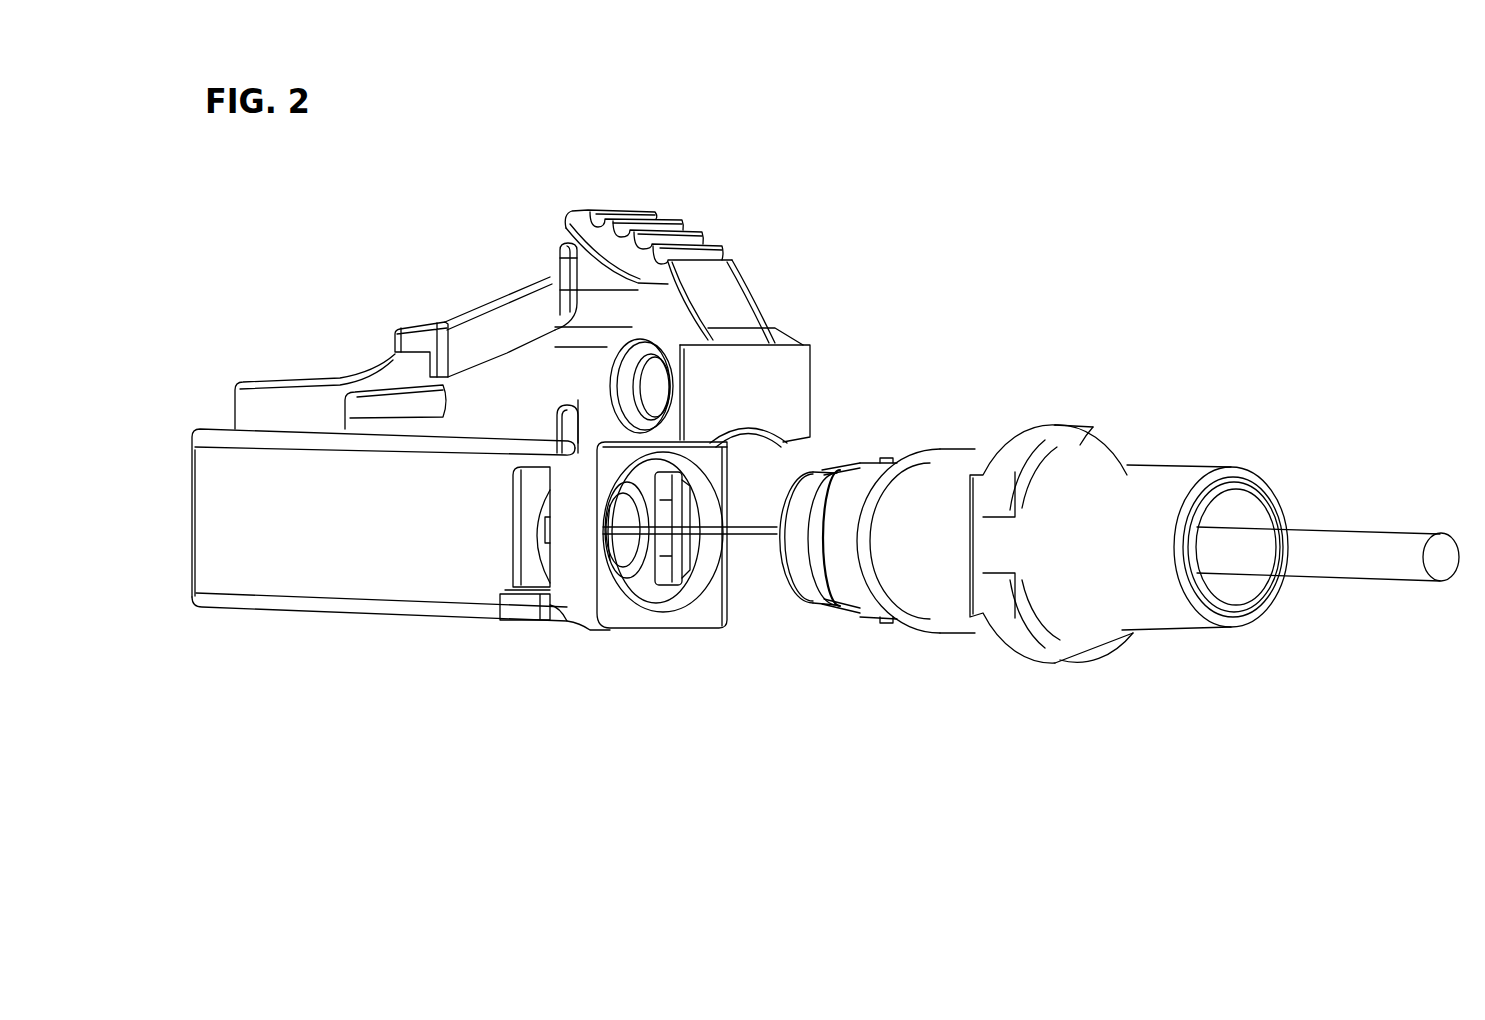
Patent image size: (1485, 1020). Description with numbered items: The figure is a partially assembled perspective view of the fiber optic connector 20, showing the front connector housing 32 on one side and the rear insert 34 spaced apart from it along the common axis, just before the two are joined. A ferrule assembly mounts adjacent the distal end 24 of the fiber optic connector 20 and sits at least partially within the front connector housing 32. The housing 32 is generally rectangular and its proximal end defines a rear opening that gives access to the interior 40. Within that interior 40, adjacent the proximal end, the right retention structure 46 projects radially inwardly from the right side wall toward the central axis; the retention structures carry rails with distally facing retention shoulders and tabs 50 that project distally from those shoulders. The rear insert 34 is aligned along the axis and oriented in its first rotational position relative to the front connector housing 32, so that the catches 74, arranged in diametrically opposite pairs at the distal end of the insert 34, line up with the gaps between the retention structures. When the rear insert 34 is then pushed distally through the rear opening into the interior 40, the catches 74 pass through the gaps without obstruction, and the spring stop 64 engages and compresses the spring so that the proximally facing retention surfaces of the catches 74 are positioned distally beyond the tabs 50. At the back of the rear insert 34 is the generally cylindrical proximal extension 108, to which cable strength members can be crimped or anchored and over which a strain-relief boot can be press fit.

The fiber optic connector 20 is at (1108, 271).
The distal end 24 is at (188, 428).
The front connector housing 32 is at (438, 622).
The interior 40 is at (707, 500).
The right retention structure 46 is at (657, 552).
The tabs 50 is at (642, 556).
The rear insert 34 is at (1060, 672).
The catches 74 is at (846, 610).
The spring stop 64 is at (1080, 427).
The proximal extension 108 is at (1176, 465).